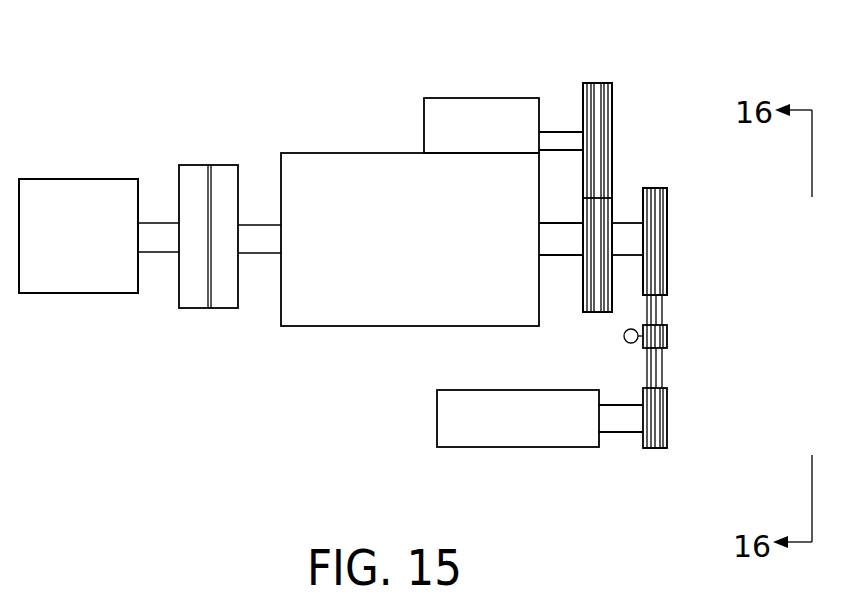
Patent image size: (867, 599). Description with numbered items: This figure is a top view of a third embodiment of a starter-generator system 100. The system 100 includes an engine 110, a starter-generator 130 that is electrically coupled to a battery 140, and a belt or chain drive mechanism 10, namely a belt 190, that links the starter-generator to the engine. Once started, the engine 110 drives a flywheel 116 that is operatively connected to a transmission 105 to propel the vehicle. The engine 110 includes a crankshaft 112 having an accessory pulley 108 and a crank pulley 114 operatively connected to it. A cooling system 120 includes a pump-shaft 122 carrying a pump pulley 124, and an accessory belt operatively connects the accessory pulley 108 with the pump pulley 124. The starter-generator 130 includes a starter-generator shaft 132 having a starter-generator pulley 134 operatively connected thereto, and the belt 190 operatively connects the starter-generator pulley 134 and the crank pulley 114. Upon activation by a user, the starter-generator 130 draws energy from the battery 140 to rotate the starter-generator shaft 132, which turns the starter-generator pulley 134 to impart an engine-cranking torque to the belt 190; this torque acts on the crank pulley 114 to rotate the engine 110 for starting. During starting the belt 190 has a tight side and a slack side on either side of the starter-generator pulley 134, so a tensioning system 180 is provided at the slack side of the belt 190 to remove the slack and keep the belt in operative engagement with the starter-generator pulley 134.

The belt or chain drive mechanism 10 is at (670, 454).
The starter-generator system 100 is at (672, 186).
The transmission 105 is at (70, 295).
The accessory pulley 108 is at (590, 313).
The engine 110 is at (328, 152).
The crankshaft 112 is at (563, 257).
The crank pulley 114 is at (668, 208).
The flywheel 116 is at (197, 308).
The cooling system 120 is at (488, 97).
The pump-shaft 122 is at (557, 130).
The pump pulley 124 is at (612, 102).
The starter-generator 130 is at (527, 448).
The starter-generator shaft 132 is at (622, 433).
The starter-generator pulley 134 is at (667, 420).
The battery 140 is at (612, 158).
The tensioning system 180 is at (676, 341).
The belt 190 is at (663, 308).